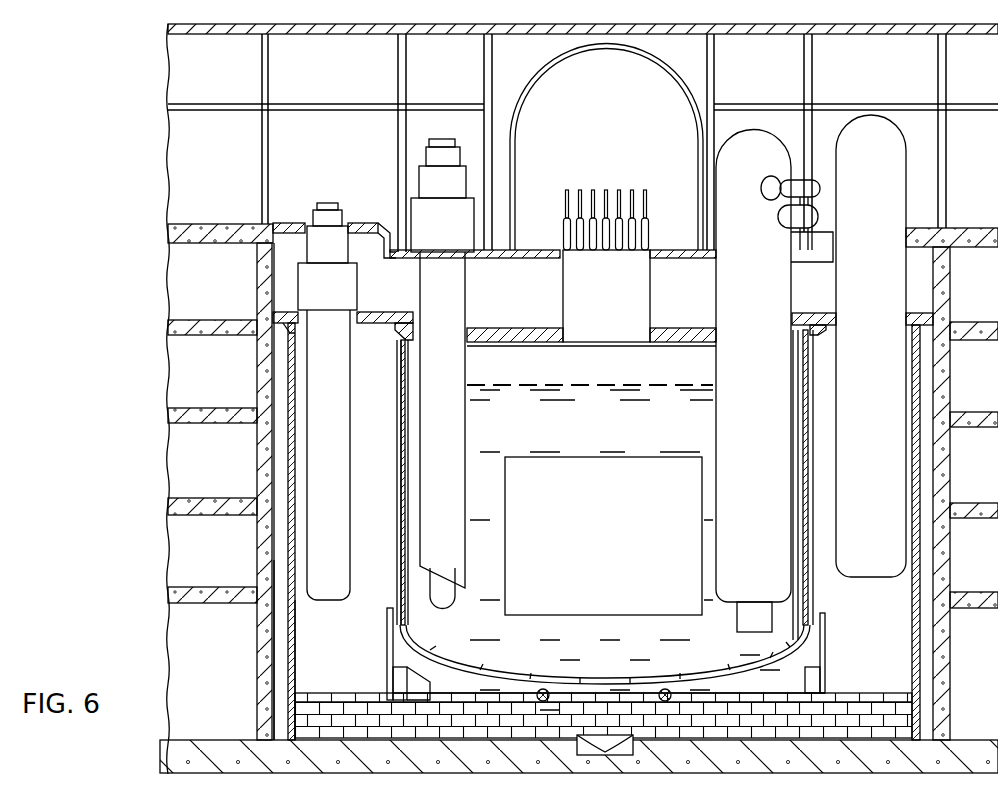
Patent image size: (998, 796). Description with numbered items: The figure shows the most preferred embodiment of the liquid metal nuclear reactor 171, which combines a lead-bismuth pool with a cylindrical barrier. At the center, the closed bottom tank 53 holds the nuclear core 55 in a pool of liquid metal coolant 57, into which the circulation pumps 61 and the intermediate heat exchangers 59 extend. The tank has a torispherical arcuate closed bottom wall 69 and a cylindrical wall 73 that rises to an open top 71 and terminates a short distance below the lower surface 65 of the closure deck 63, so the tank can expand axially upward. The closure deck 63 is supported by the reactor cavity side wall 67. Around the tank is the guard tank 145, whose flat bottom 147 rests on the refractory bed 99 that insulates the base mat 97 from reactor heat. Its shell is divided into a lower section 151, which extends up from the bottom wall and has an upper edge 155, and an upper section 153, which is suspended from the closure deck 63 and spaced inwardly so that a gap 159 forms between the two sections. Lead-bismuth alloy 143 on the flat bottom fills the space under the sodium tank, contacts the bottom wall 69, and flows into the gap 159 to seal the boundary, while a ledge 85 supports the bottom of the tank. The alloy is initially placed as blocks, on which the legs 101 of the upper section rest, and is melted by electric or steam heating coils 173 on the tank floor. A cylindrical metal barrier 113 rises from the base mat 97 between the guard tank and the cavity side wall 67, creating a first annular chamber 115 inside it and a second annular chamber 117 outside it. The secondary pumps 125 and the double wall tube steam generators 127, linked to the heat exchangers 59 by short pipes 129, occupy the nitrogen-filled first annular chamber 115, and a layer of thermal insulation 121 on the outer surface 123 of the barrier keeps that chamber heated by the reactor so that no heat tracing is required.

The liquid metal nuclear reactor 171 is at (193, 18).
The short pipes 129 is at (272, 342).
The reactor cavity side wall 67 is at (258, 375).
The barrier 113 is at (288, 448).
The second annular chamber 117 is at (279, 562).
The layer of thermal insulation 121 is at (273, 605).
The surface of the metal barrier 123 is at (288, 646).
The base mat 97 is at (222, 750).
The secondary pumps 125 is at (341, 436).
The first annular chamber 115 is at (386, 498).
The circulation pumps 61 is at (450, 378).
The cylindrical wall 73 is at (410, 488).
The closure deck 63 is at (528, 328).
The lower surface 65 is at (497, 346).
The open top 71 is at (713, 350).
The liquid metal coolant 57 is at (612, 438).
The nuclear core 55 is at (612, 538).
The heat exchangers 59 is at (765, 390).
The steam generators 127 is at (883, 345).
The upper section 153 is at (812, 480).
The gap 159 is at (388, 603).
The closed bottom tank 53 is at (417, 630).
The legs 101 is at (408, 676).
The refractory bed 99 is at (330, 700).
The heating coils 173 is at (543, 688).
The arcuate closed bottom wall 69 is at (620, 676).
The flat bottom 147 is at (688, 693).
The lead-bismuth alloy 143 is at (725, 682).
The ledge 85 is at (793, 636).
The upper edge 155 is at (808, 598).
The guard tank 145 is at (819, 572).
The lower section 151 is at (826, 672).